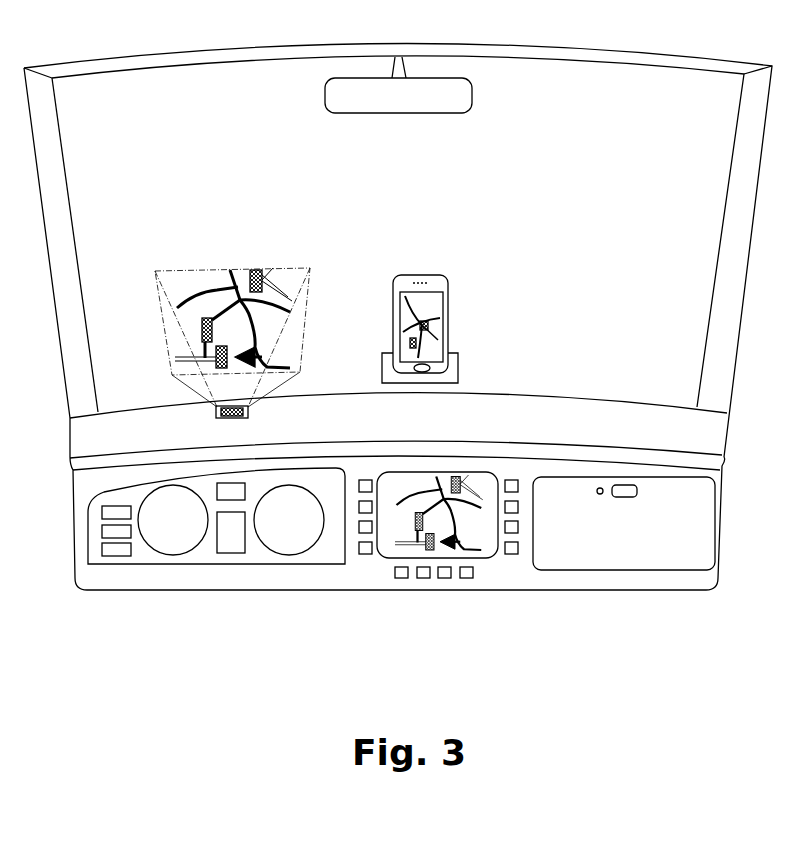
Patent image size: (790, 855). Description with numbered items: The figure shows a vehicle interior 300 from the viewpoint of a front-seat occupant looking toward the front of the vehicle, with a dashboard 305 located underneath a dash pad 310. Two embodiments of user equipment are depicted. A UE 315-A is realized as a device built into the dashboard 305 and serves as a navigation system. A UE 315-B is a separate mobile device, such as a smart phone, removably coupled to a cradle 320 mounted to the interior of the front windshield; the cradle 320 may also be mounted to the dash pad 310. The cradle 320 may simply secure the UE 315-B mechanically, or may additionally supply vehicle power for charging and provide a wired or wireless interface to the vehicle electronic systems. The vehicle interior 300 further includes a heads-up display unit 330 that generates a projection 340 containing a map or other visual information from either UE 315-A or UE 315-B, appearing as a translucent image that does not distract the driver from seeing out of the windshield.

The vehicle interior 300 is at (89, 27).
The dashboard 305 is at (110, 575).
The dash pad 310 is at (596, 410).
The UE 315-A is at (390, 559).
The UE 315-B is at (450, 300).
The cradle 320 is at (460, 370).
The HUD unit 330 is at (248, 412).
The projection 340 is at (244, 271).